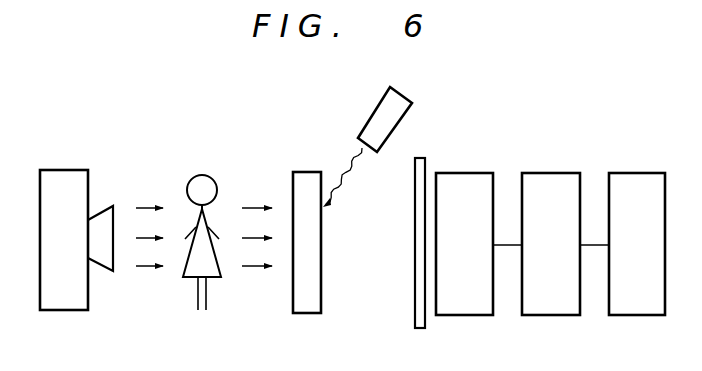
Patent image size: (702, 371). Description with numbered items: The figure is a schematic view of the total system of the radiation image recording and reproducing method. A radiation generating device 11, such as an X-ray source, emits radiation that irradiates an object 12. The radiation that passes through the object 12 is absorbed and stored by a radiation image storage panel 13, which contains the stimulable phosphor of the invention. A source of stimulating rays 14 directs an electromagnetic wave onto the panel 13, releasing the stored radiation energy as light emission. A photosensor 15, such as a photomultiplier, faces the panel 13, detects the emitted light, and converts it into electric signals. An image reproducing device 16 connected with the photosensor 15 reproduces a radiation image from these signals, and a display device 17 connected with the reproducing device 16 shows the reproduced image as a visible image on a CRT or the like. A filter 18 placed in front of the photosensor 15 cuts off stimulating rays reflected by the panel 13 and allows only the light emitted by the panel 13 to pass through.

The radiation generating device 11 is at (66, 304).
The object 12 is at (199, 297).
The radiation image storage panel 13 is at (309, 305).
The source of stimulating rays 14 is at (400, 107).
The photosensor 15 is at (471, 305).
The image reproducing device 16 is at (556, 305).
The display device 17 is at (641, 305).
The filter 18 is at (414, 300).